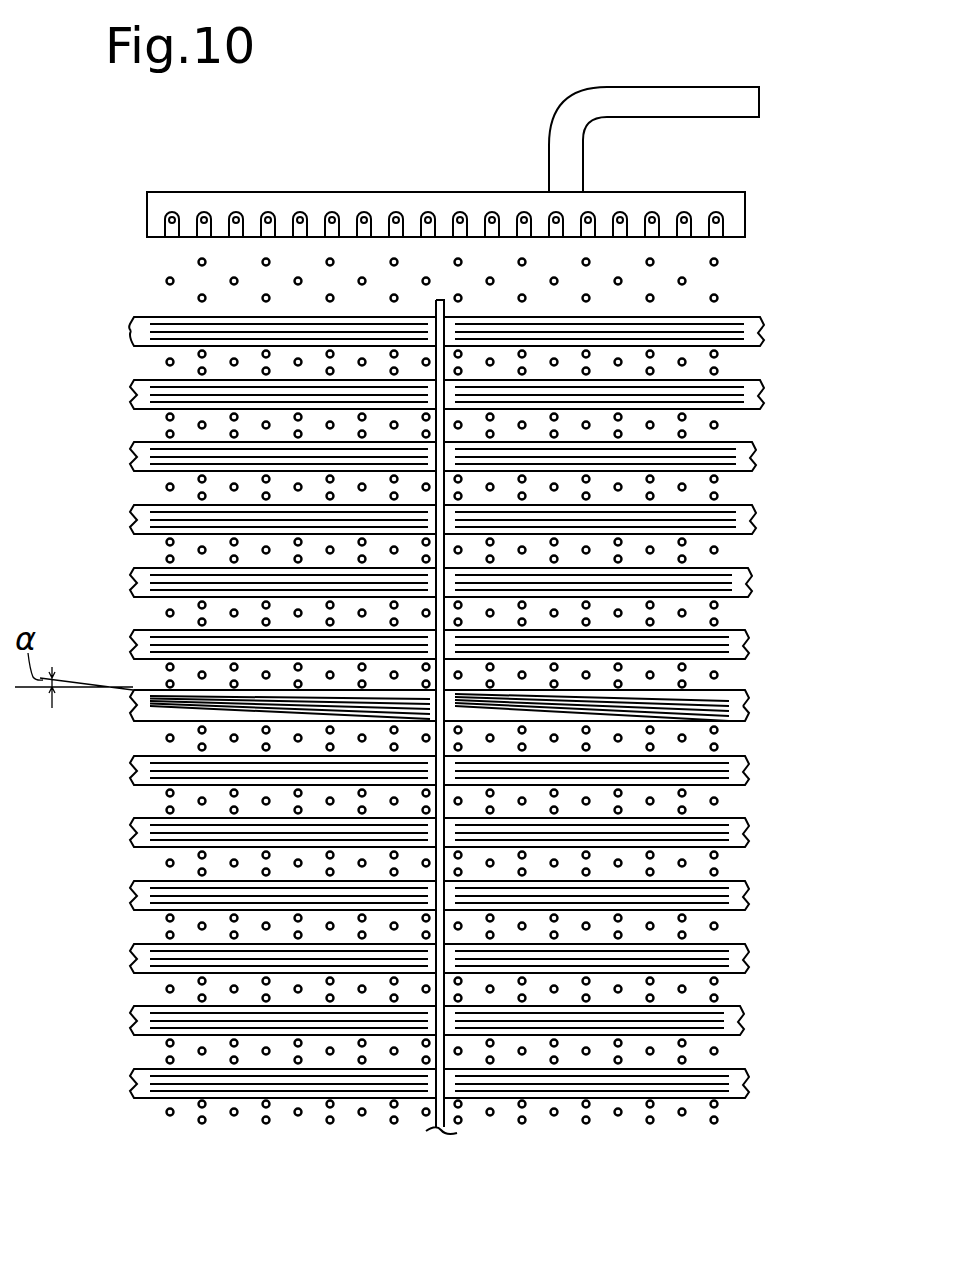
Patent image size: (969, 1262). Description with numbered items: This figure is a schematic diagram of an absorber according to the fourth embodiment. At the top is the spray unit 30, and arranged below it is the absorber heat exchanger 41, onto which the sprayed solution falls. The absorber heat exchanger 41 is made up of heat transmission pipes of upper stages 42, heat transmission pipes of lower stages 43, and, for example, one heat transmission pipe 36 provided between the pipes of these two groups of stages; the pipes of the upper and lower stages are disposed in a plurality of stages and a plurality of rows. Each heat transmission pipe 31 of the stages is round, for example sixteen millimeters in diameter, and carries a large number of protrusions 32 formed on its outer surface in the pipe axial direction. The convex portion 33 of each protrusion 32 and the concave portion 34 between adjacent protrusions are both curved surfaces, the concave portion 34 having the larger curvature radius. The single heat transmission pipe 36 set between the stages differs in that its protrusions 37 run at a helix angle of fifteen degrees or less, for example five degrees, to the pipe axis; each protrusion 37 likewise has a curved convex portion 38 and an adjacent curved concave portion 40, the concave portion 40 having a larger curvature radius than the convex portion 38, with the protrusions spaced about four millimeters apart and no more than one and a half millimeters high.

The spray unit 30 is at (376, 192).
The heat transmission pipe 31 is at (382, 637).
The protrusion 32 is at (388, 276).
The convex portion 33 is at (160, 317).
The concave portion 34 is at (220, 300).
The heat transmission pipe 36 is at (417, 701).
The protrusion 37 is at (152, 685).
The convex portion 38 is at (750, 690).
The concave portion 40 is at (745, 722).
The absorber heat exchanger 41 is at (738, 308).
The heat transmission pipes of upper stages 42 is at (120, 442).
The heat transmission pipes of lower stages 43 is at (143, 863).